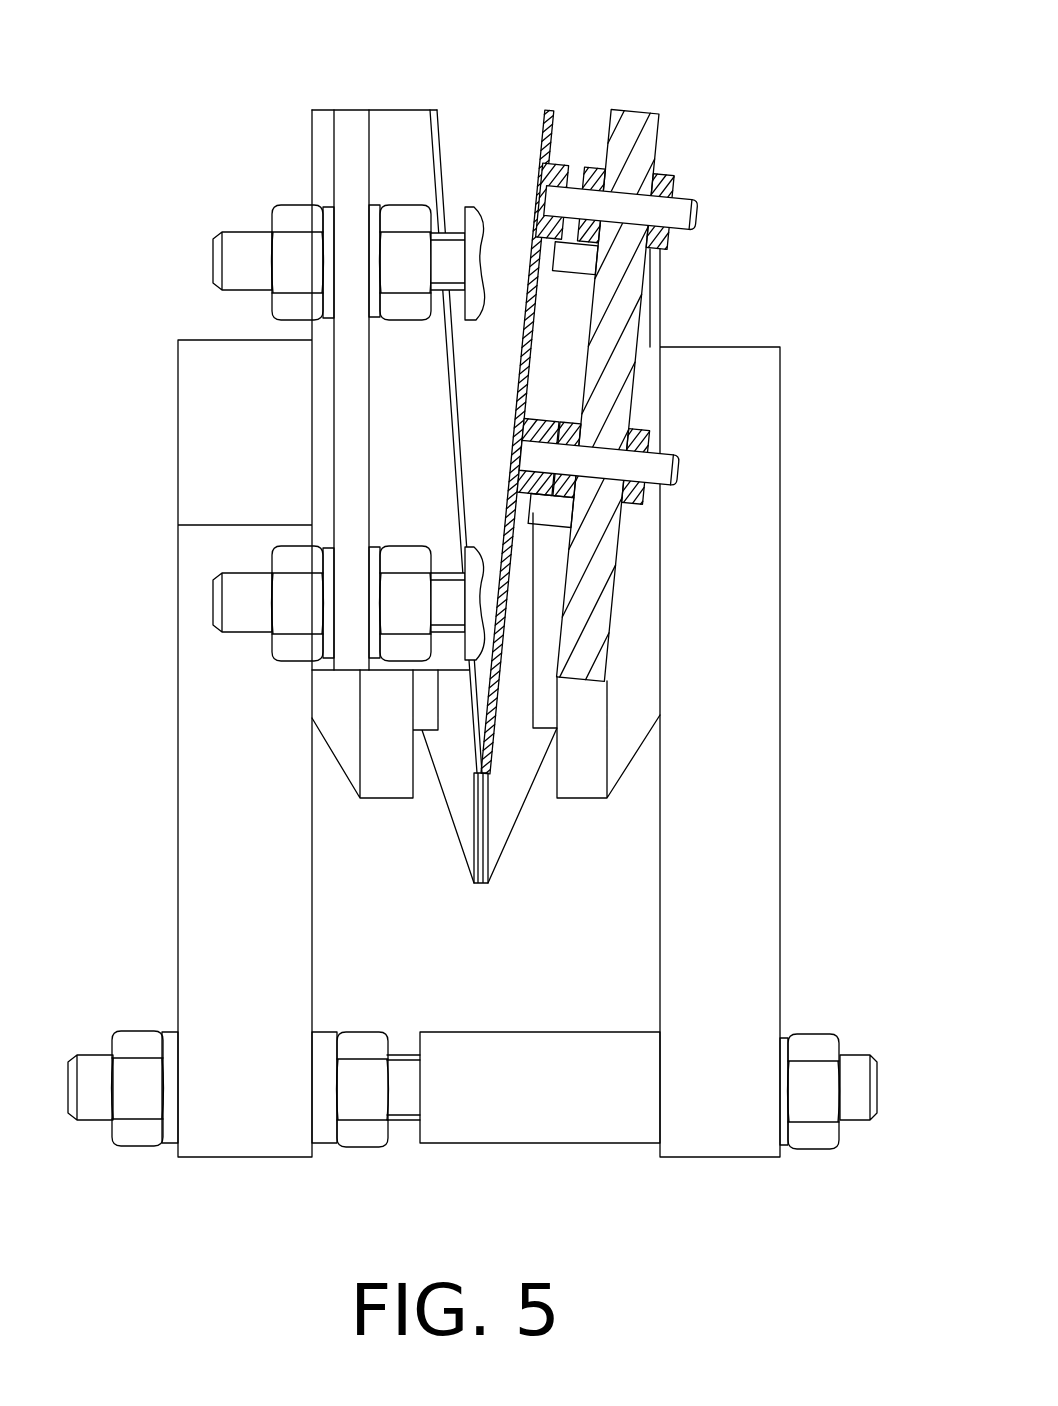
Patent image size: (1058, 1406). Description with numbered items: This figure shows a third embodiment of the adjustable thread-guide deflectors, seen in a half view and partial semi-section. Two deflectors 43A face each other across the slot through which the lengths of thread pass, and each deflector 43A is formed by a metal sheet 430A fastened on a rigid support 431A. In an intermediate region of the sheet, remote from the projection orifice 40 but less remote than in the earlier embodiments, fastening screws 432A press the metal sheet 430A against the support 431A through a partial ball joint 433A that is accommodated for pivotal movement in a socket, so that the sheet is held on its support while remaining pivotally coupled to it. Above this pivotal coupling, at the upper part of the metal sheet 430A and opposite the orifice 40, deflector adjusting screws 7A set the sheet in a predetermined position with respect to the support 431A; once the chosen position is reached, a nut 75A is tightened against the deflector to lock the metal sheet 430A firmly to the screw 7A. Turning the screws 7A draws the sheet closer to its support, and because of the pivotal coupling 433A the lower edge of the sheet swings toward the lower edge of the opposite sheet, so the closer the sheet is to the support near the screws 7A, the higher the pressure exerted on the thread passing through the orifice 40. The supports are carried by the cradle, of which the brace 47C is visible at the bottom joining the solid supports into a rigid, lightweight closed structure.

The deflector 43A is at (533, 95).
The metal sheet 430A is at (556, 130).
The rigid support 431A is at (610, 307).
The fastening screw 432A is at (593, 468).
The partial ball joint 433A is at (540, 522).
The nut 75A is at (567, 163).
The deflector adjusting screw 7A is at (662, 203).
The projection orifice 40 is at (472, 839).
The brace 47C is at (580, 1112).